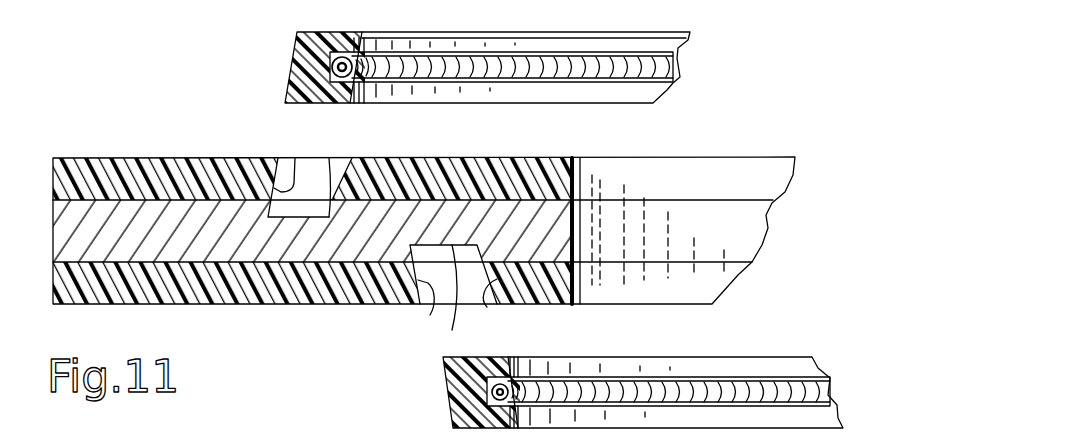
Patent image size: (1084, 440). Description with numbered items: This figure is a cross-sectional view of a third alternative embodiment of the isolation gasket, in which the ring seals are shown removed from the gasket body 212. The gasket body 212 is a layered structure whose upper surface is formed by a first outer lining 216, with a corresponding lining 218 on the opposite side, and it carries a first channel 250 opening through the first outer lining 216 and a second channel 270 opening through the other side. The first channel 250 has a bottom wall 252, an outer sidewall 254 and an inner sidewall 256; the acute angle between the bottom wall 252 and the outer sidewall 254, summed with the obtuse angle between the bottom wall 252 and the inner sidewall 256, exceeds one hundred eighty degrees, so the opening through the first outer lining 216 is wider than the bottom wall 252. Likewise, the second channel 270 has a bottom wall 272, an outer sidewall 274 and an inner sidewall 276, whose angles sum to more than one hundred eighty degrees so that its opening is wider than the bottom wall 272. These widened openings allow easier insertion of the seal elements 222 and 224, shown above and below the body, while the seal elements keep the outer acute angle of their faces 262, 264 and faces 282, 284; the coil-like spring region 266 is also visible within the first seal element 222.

The gasket body 212 is at (170, 119).
The first outer lining 216 is at (112, 170).
The bottom conductive layer 218 is at (142, 297).
The seal element 222 is at (592, 95).
The seal element 224 is at (705, 363).
The first channel 250 is at (313, 164).
The bottom wall 252 is at (329, 158).
The outer sidewall 254 is at (295, 158).
The inner sidewall 256 is at (348, 158).
The face 262 is at (330, 106).
The face 264 is at (292, 72).
The contact spring 266 is at (387, 33).
The second channel 270 is at (445, 286).
The bottom wall 272 is at (452, 330).
The outer sidewall 274 is at (430, 315).
The inner sidewall 276 is at (487, 307).
The face 282 is at (492, 355).
The face 284 is at (449, 398).